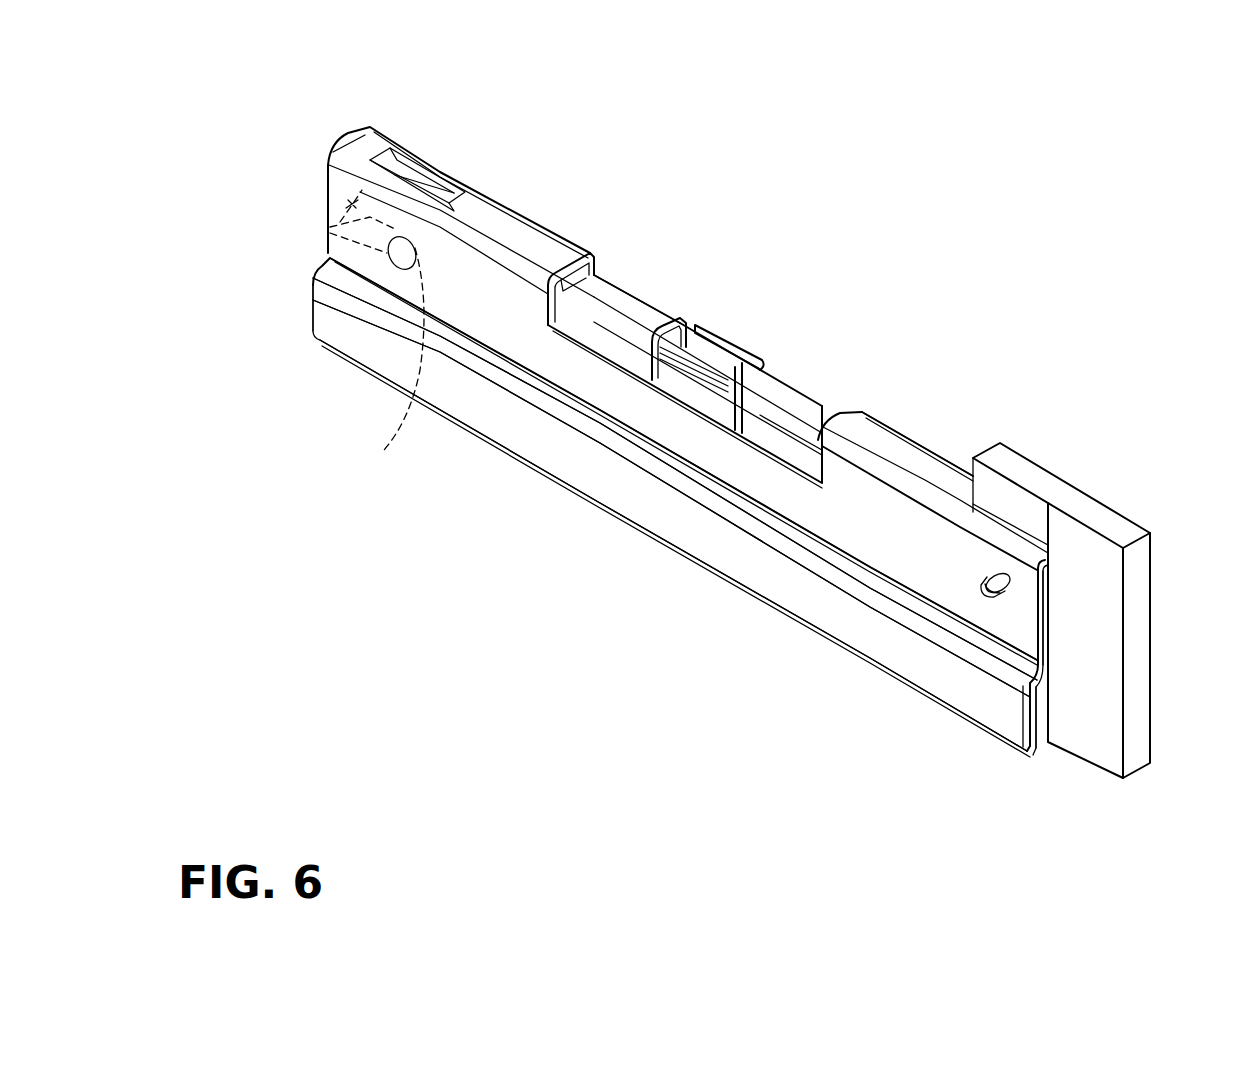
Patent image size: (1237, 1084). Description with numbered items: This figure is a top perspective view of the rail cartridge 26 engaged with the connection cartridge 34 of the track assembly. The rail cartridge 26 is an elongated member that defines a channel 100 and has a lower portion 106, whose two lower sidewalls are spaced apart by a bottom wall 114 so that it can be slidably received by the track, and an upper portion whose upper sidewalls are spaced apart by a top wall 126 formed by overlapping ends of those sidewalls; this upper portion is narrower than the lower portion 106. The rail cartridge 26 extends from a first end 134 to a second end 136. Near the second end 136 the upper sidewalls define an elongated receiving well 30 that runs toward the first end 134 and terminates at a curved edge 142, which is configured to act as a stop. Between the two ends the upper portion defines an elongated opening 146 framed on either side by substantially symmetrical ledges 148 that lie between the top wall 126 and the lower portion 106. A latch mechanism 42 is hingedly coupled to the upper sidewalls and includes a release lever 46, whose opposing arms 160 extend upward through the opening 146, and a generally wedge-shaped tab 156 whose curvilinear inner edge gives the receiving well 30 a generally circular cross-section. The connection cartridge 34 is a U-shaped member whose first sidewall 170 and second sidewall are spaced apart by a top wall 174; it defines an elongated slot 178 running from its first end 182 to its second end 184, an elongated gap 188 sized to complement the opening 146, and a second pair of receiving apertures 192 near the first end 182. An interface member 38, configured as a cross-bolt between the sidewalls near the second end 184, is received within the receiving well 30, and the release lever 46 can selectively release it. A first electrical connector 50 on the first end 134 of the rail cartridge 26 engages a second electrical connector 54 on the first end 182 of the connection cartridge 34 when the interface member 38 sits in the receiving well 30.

The rail cartridge 26 is at (767, 567).
The receiving well 30 is at (422, 150).
The connection cartridge 34 is at (903, 460).
The interface member 38 is at (400, 264).
The latch mechanism 42 is at (668, 370).
The release lever 46 is at (708, 398).
The first electrical connector 50 is at (1140, 637).
The second electrical connector 54 is at (1017, 468).
The channel 100 is at (1040, 756).
The lower portion 106 is at (840, 620).
The bottom wall 114 is at (1030, 752).
The top wall 126 is at (1053, 640).
The first end 134 is at (1030, 710).
The second end 136 is at (307, 310).
The curved edge 142 is at (393, 366).
The opening 146 is at (765, 372).
The ledges 148 is at (640, 310).
The tab 156 is at (330, 245).
The opposing arms 160 is at (745, 365).
The first sidewall 170 is at (753, 483).
The top wall 174 is at (947, 478).
The elongated slot 178 is at (566, 302).
The first end 182 is at (1050, 598).
The second end 184 is at (328, 180).
The elongated gap 188 is at (637, 280).
The second pair of receiving apertures 192 is at (982, 604).